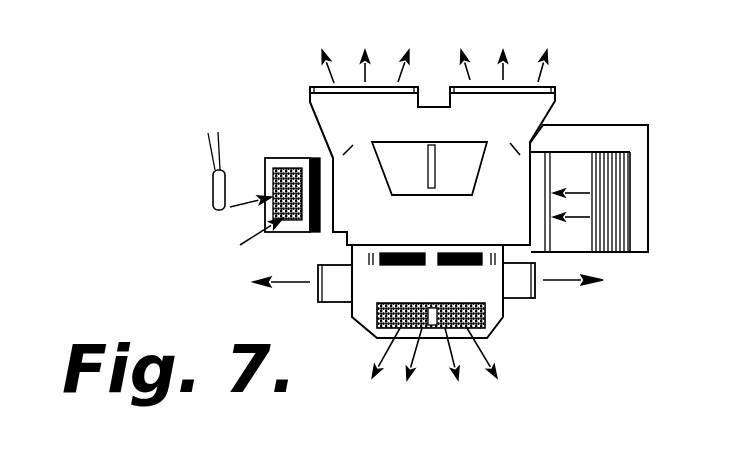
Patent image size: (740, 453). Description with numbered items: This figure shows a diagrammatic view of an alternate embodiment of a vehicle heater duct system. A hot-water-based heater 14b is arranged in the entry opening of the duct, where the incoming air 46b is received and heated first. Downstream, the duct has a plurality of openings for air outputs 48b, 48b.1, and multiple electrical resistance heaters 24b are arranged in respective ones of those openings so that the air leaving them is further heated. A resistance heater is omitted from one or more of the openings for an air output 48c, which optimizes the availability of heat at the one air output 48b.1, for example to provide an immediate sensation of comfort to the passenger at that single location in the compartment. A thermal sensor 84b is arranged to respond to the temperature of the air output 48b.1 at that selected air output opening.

The hot-water-based heater 14b is at (617, 230).
The heat exchanger 46b is at (580, 193).
The electrical resistance heaters 24b is at (330, 157).
The air output 48c is at (332, 80).
The air outputs 48b is at (282, 281).
The air output 48b.1 is at (241, 232).
The thermal sensor 84b is at (212, 196).